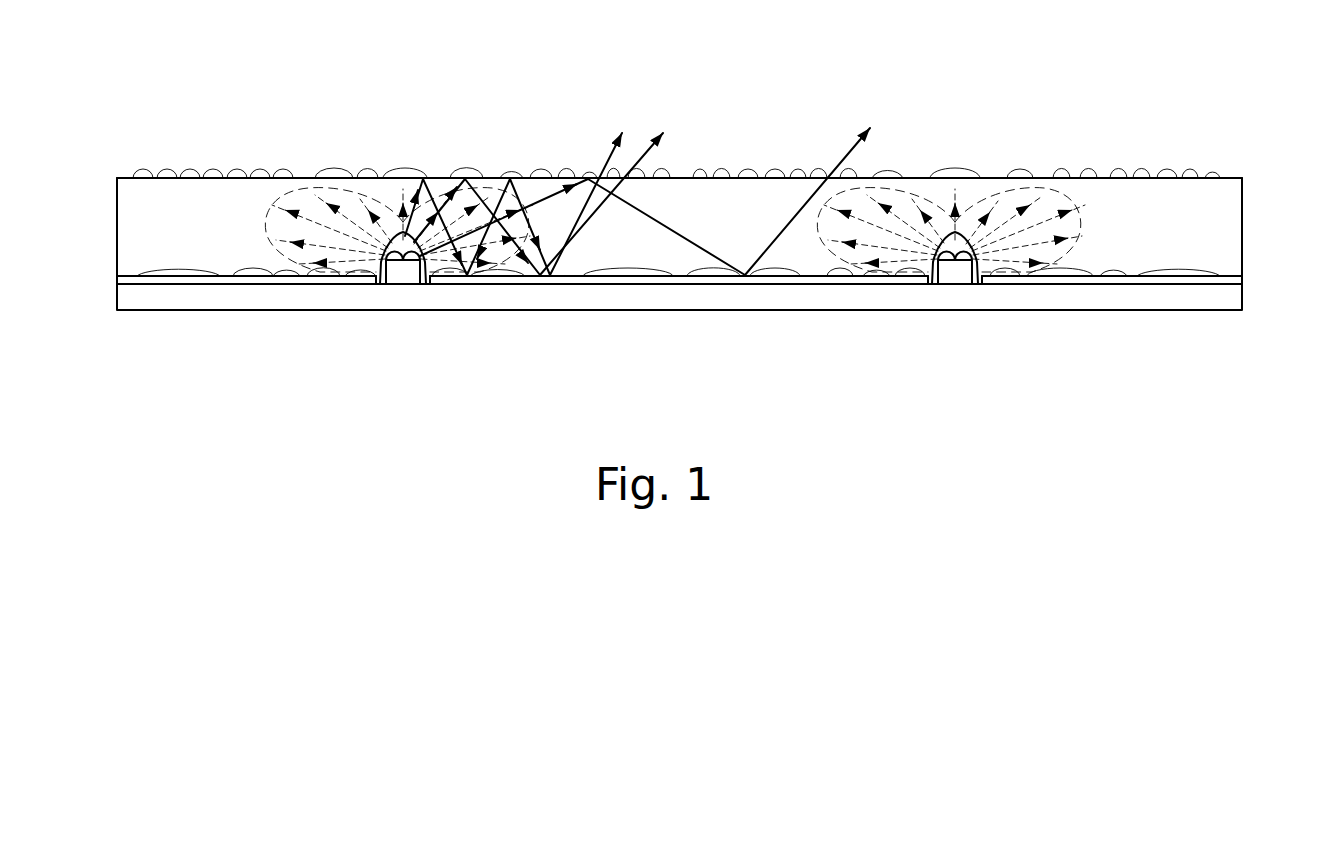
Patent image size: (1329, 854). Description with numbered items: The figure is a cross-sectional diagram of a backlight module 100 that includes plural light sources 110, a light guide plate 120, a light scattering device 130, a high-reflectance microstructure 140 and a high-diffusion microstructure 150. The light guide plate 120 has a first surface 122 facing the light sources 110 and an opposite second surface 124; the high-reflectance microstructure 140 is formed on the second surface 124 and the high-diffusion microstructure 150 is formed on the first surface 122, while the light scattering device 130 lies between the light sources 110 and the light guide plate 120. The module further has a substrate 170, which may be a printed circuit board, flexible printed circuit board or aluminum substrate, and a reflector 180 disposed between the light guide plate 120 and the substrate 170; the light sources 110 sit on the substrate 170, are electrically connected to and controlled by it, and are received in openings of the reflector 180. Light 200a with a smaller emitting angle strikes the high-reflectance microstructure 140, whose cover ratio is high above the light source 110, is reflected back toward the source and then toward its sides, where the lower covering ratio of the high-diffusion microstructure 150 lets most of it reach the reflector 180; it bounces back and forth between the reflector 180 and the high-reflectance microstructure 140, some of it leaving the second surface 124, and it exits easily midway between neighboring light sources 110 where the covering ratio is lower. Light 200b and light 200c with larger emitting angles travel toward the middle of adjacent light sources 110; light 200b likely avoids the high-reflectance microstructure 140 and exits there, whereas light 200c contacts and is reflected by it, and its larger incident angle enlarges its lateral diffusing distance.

The backlight module 100 is at (186, 90).
The light sources 110 is at (402, 268).
The light guide plate 120 is at (707, 185).
The first surface 122 is at (121, 280).
The second surface 124 is at (126, 177).
The light scattering device 130 is at (433, 197).
The high-reflectance microstructure 140 is at (403, 176).
The high-diffusion microstructure 150 is at (181, 272).
The substrate 170 is at (1238, 298).
The reflector 180 is at (1238, 280).
The light 200a is at (408, 203).
The light 200b is at (448, 195).
The light 200c is at (548, 195).